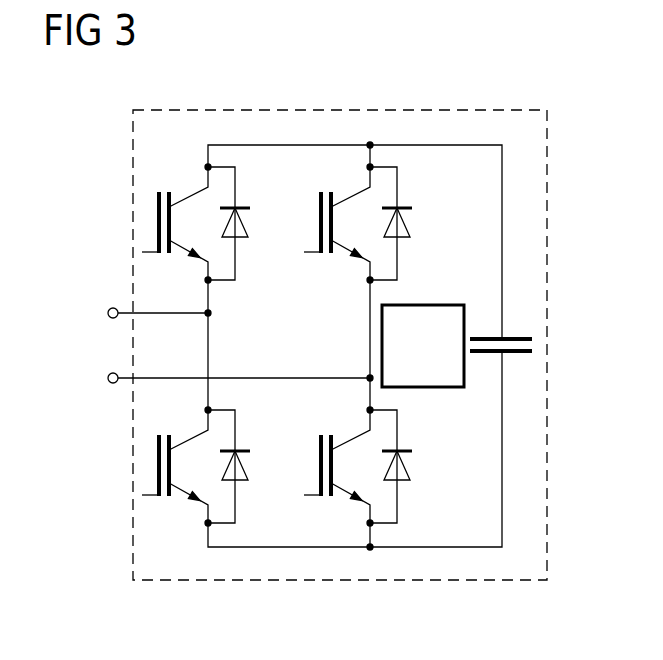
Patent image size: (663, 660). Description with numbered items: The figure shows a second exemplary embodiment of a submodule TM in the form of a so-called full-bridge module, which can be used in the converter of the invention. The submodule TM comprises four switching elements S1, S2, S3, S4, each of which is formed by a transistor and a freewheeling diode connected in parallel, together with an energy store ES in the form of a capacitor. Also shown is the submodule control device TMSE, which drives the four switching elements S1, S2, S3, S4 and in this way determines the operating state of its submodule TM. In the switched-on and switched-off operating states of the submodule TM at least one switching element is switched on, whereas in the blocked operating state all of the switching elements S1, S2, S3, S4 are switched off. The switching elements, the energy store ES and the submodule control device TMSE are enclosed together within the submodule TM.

The submodule TM is at (372, 109).
The switching element S1 is at (159, 214).
The switching element S2 is at (159, 458).
The switching element S3 is at (319, 227).
The switching element S4 is at (319, 475).
The submodule control device TMSE is at (423, 346).
The energy store ES is at (520, 335).